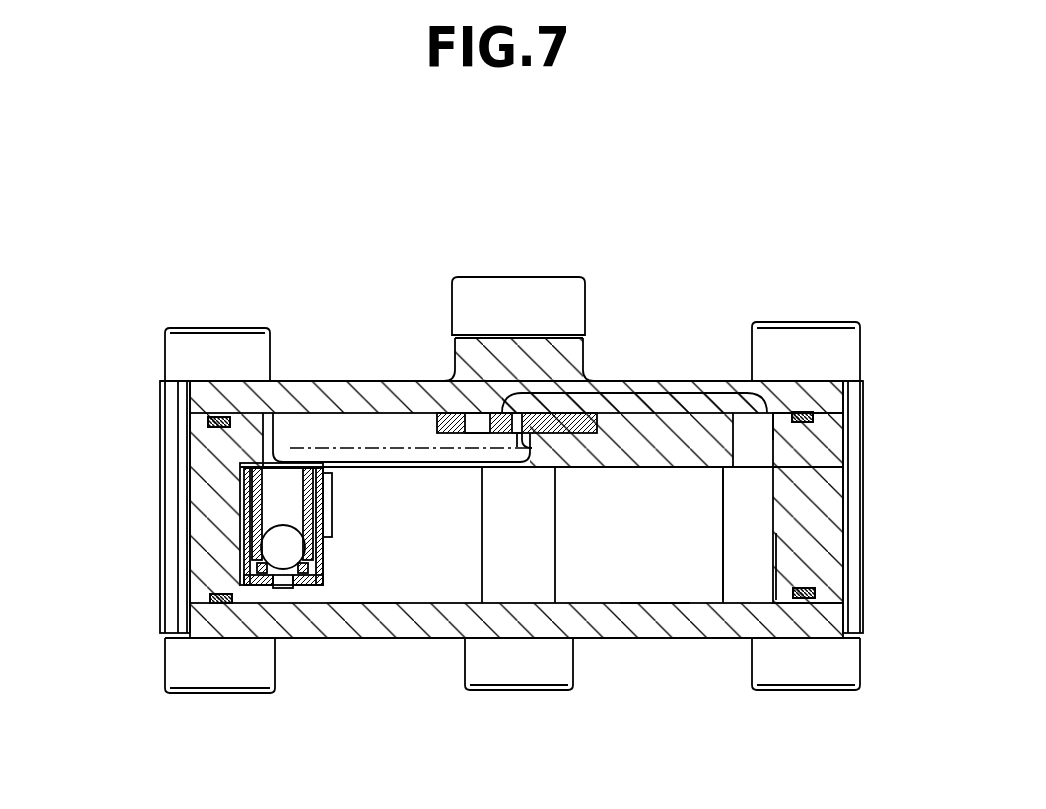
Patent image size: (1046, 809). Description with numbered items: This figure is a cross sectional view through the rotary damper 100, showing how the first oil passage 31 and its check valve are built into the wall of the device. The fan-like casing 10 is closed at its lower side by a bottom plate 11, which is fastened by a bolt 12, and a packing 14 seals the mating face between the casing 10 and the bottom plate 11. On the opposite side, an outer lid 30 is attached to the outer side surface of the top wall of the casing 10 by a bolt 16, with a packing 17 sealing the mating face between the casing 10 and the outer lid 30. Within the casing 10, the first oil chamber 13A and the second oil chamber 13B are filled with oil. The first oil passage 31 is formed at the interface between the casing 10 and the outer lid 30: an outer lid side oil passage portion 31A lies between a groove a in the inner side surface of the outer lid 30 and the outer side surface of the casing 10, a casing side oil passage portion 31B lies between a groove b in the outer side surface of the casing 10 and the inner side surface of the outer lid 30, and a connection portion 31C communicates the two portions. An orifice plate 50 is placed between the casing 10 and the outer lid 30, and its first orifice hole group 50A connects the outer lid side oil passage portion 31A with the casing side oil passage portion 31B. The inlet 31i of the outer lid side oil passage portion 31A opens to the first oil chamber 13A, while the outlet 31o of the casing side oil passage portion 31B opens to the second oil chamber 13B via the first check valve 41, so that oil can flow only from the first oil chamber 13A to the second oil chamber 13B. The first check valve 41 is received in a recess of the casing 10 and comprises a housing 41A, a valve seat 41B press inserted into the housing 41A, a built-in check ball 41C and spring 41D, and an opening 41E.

The rotary damper 100 is at (211, 288).
The casing 10 is at (213, 505).
The bottom plate 11 is at (417, 622).
The bolt 12 is at (540, 673).
The first oil chamber 13A is at (655, 582).
The second oil chamber 13B is at (362, 588).
The packing 14 is at (818, 590).
The bolt 16 is at (838, 344).
The packing 17 is at (815, 415).
The outer lid 30 is at (207, 400).
The first oil passage 31 is at (650, 390).
The outer lid side oil passage portion 31A is at (706, 404).
The casing side oil passage portion 31B is at (367, 433).
The connection portion 31C is at (517, 404).
The inlet 31i is at (730, 497).
The outlet 31o is at (276, 461).
The first check valve 41 is at (340, 550).
The housing 41A is at (317, 607).
The valve seat 41B is at (321, 504).
The check ball 41C is at (270, 544).
The spring 41D is at (327, 562).
The opening 41E is at (283, 588).
The orifice plate 50 is at (577, 413).
The first orifice hole group 50A is at (518, 434).
The groove a is at (769, 413).
The groove b is at (417, 459).